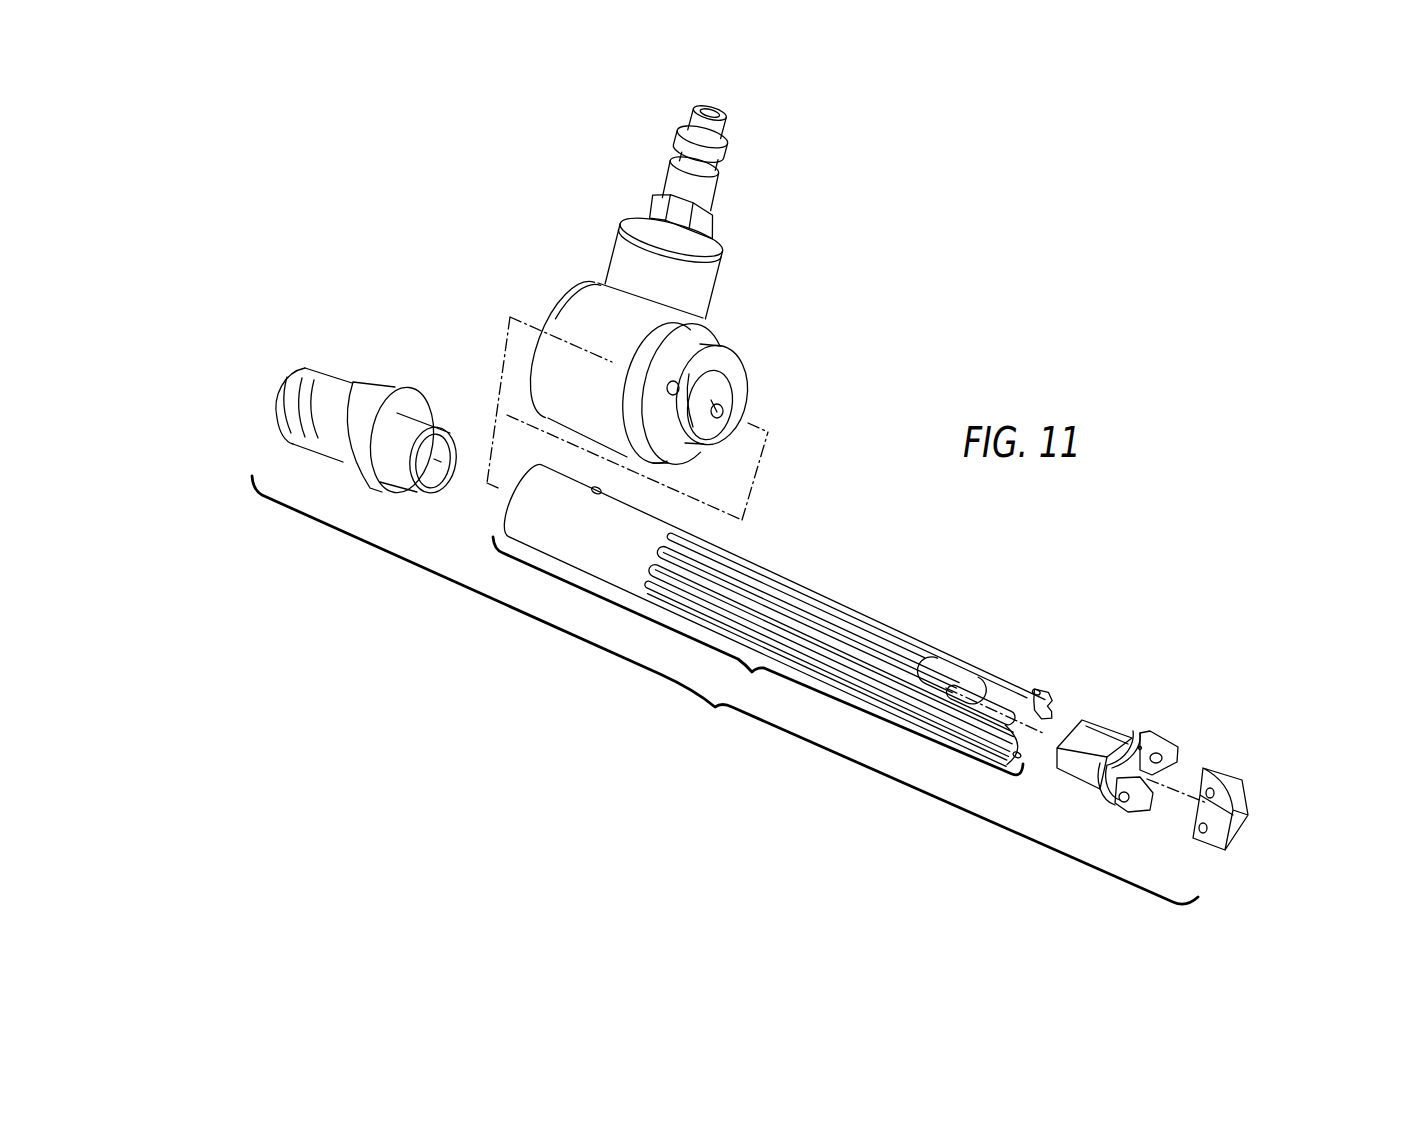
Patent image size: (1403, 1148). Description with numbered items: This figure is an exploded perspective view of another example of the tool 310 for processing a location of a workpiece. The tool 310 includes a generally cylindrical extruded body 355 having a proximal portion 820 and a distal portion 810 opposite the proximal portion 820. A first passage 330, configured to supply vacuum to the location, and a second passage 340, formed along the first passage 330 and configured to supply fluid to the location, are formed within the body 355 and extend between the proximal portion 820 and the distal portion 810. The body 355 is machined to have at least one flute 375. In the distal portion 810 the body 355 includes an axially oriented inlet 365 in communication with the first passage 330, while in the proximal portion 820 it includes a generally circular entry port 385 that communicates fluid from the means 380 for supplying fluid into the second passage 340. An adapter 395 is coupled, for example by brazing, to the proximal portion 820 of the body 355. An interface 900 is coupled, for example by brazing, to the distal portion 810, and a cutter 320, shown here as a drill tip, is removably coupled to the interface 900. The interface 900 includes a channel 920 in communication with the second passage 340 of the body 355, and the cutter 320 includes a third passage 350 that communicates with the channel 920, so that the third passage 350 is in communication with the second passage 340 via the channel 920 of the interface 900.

The tool 310 is at (725, 690).
The cutter 320 is at (1219, 778).
The first passage 330 is at (950, 677).
The second passage 340 is at (1041, 695).
The third passage 350 is at (1238, 797).
The body 355 is at (758, 656).
The inlet 365 is at (998, 689).
The flute 375 is at (773, 623).
The means for supplying fluid 380 is at (739, 306).
The entry port 385 is at (595, 486).
The adapter 395 is at (347, 357).
The distal portion 810 is at (1038, 669).
The proximal portion 820 is at (486, 530).
The interface 900 is at (1202, 720).
The channel 920 is at (1140, 746).